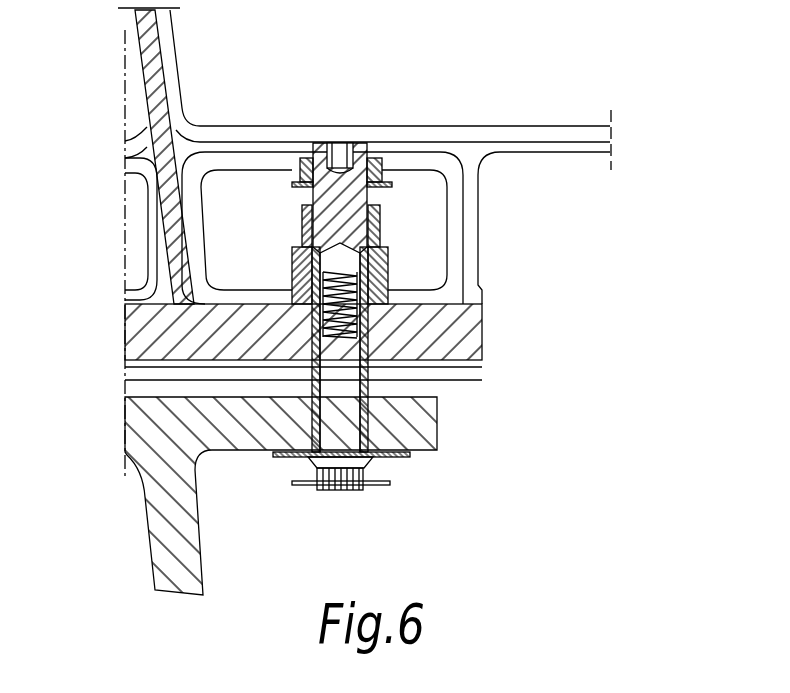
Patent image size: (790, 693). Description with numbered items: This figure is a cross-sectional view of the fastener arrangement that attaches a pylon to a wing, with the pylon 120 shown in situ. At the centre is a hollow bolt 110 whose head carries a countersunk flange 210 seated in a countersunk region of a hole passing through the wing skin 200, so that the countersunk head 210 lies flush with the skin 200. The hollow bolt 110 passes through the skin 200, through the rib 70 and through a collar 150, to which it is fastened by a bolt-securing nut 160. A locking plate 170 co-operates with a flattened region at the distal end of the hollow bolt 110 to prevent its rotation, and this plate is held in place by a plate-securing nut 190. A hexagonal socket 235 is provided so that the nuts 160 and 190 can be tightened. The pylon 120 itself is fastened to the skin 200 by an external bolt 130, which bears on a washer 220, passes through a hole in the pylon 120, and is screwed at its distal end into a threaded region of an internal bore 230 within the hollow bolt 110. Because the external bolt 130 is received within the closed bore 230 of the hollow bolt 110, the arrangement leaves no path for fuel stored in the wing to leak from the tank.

The rib 70 is at (452, 325).
The hollow bolt 110 is at (350, 196).
The pylon 120 is at (167, 527).
The external bolt 130 is at (353, 488).
The collar 150 is at (301, 240).
The bolt-securing nut 160 is at (387, 230).
The locking plate 170 is at (388, 186).
The plate-securing nut 190 is at (374, 165).
The wing skin 200 is at (470, 385).
The countersunk head flange 210 is at (312, 393).
The washer 220 is at (280, 455).
The internal bore 230 is at (296, 284).
The hexagonal socket 235 is at (341, 163).